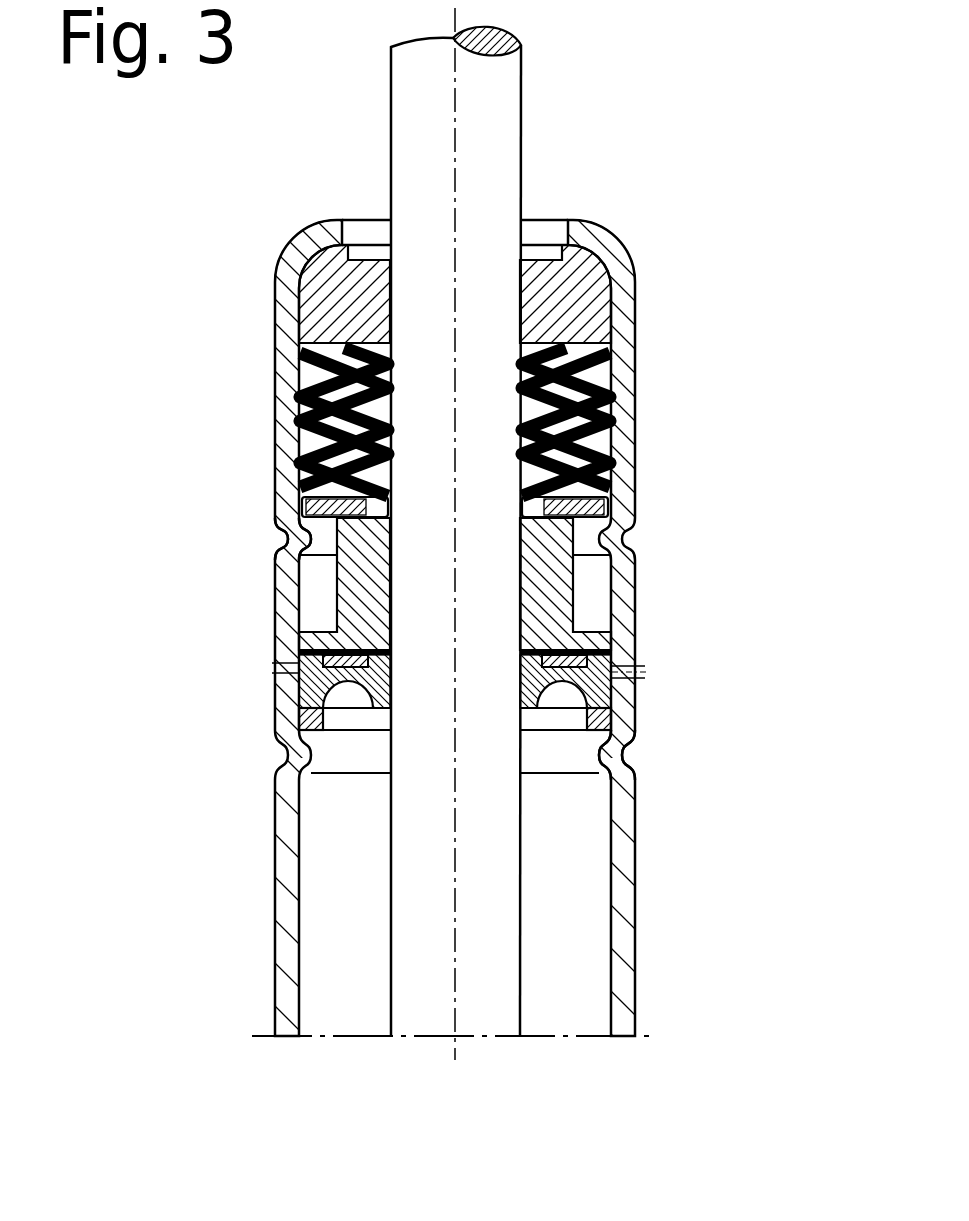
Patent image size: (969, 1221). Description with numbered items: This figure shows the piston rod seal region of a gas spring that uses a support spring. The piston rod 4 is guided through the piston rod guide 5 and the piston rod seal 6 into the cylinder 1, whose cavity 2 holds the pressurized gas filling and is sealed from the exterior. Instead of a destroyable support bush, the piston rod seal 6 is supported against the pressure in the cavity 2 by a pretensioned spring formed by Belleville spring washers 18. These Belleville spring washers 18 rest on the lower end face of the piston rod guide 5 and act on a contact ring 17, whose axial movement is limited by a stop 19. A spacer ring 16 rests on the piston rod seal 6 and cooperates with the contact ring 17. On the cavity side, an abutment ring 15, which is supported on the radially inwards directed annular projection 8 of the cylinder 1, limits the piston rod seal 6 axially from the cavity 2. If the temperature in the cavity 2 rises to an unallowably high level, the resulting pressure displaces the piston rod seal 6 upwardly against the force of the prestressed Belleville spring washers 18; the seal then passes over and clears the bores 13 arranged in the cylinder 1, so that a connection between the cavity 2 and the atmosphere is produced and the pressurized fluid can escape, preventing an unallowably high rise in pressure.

The cylinder 1 is at (291, 887).
The cavity 2 is at (580, 877).
The piston rod 4 is at (494, 128).
The piston rod guide 5 is at (585, 278).
The piston rod seal 6 is at (640, 680).
The annular projection 8 is at (627, 752).
The bores 13 is at (270, 666).
The abutment ring 15 is at (285, 736).
The spacer ring 16 is at (553, 582).
The contact ring 17 is at (593, 500).
The Belleville spring washers 18 is at (612, 400).
The stop 19 is at (273, 527).